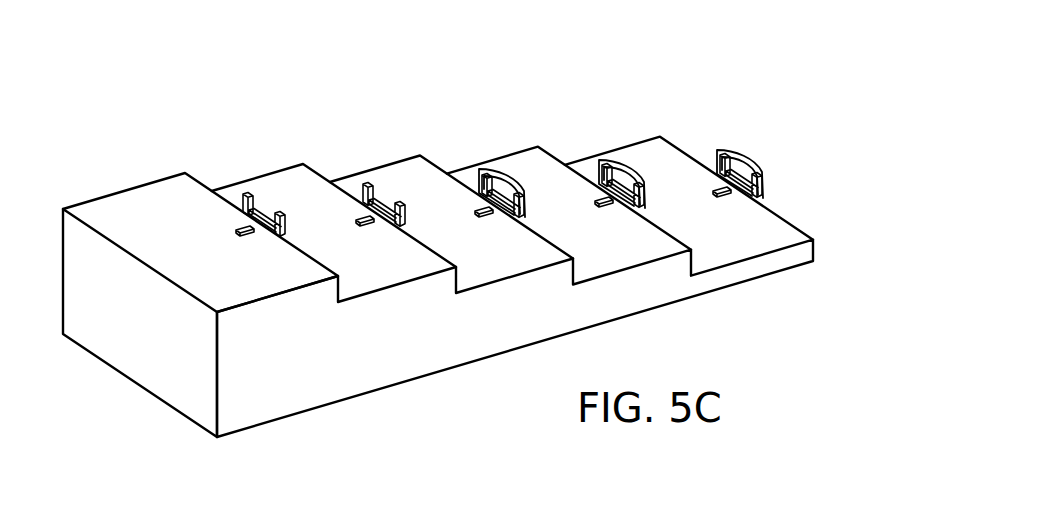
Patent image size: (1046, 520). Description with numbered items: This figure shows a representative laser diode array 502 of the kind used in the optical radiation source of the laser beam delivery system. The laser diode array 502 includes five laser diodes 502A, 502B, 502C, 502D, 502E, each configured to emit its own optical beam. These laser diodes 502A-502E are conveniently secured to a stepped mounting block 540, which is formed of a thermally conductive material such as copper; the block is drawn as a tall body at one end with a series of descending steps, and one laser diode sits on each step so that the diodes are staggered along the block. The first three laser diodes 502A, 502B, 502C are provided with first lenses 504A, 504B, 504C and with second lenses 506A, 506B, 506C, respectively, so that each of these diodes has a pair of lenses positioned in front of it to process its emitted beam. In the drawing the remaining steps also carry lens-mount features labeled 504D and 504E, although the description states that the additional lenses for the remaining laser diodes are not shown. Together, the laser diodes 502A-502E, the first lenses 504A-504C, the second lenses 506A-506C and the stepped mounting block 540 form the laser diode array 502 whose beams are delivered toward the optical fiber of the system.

The laser diode array 502 is at (800, 288).
The laser diode 502A is at (237, 230).
The laser diode 502B is at (358, 222).
The laser diode 502C is at (475, 208).
The laser diode 502D is at (593, 200).
The laser diode 502E is at (712, 190).
The first lens 504A is at (266, 214).
The first lens 504B is at (383, 210).
The first lens 504C is at (506, 208).
The fourth component mount 504D is at (621, 202).
The fifth component mount 504E is at (742, 187).
The second lens 506A is at (505, 177).
The second lens 506B is at (623, 167).
The second lens 506C is at (742, 157).
The stepped mounting block 540 is at (262, 400).